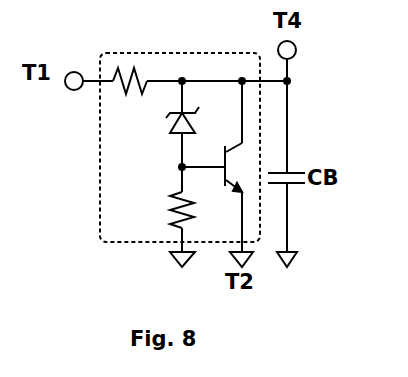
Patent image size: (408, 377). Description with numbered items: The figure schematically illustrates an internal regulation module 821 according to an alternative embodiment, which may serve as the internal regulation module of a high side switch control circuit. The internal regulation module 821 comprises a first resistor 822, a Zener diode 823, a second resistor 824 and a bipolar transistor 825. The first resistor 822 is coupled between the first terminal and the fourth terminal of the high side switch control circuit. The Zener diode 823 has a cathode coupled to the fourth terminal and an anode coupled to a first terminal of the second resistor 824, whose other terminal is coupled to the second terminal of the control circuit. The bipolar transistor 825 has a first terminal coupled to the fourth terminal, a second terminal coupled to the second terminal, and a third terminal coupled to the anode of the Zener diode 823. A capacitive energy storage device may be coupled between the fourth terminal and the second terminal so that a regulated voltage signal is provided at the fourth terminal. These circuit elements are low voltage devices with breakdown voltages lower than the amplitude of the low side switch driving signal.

The internal regulation module 821 is at (162, 53).
The first resistor 822 is at (125, 95).
The Zener diode 823 is at (166, 133).
The second resistor 824 is at (163, 201).
The bipolar transistor 825 is at (237, 162).